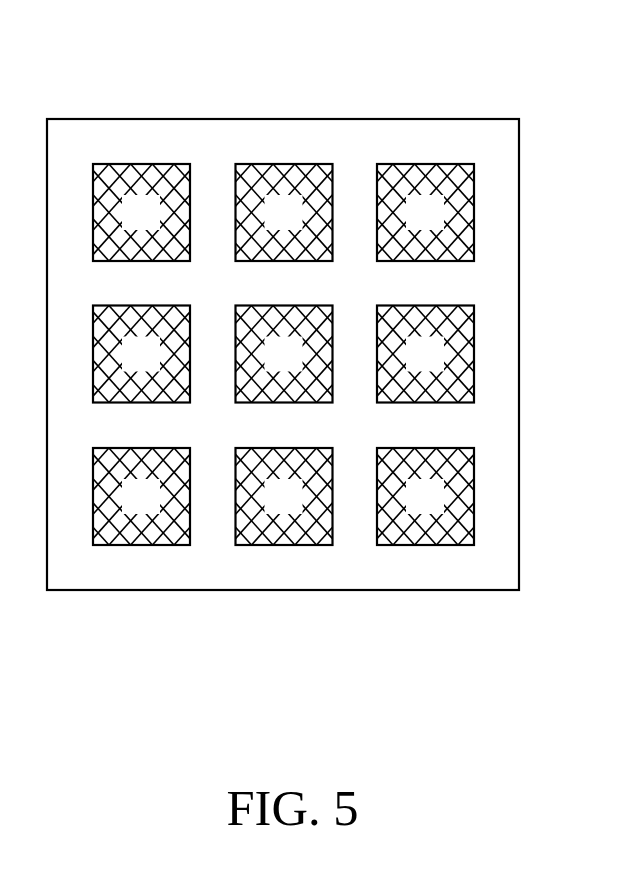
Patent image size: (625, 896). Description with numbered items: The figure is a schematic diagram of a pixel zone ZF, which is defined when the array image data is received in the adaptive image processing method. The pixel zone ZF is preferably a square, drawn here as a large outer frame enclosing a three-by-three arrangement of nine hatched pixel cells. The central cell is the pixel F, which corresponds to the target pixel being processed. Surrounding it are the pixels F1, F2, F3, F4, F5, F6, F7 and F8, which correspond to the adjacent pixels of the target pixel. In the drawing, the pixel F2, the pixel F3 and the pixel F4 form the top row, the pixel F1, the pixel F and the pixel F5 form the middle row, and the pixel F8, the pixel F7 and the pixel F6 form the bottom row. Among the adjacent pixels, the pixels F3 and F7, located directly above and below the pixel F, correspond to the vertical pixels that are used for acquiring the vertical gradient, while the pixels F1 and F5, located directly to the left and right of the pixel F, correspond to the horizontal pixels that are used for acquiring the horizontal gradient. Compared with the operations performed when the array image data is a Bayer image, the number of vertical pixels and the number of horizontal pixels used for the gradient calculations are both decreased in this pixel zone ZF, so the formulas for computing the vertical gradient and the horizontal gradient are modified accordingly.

The pixel zone ZF is at (283, 119).
The pixel F is at (284, 354).
The pixel F1 is at (141, 354).
The pixel F2 is at (141, 212).
The pixel F3 is at (284, 212).
The pixel F4 is at (425, 212).
The pixel F5 is at (425, 354).
The pixel F6 is at (425, 496).
The pixel F7 is at (284, 496).
The pixel F8 is at (141, 496).